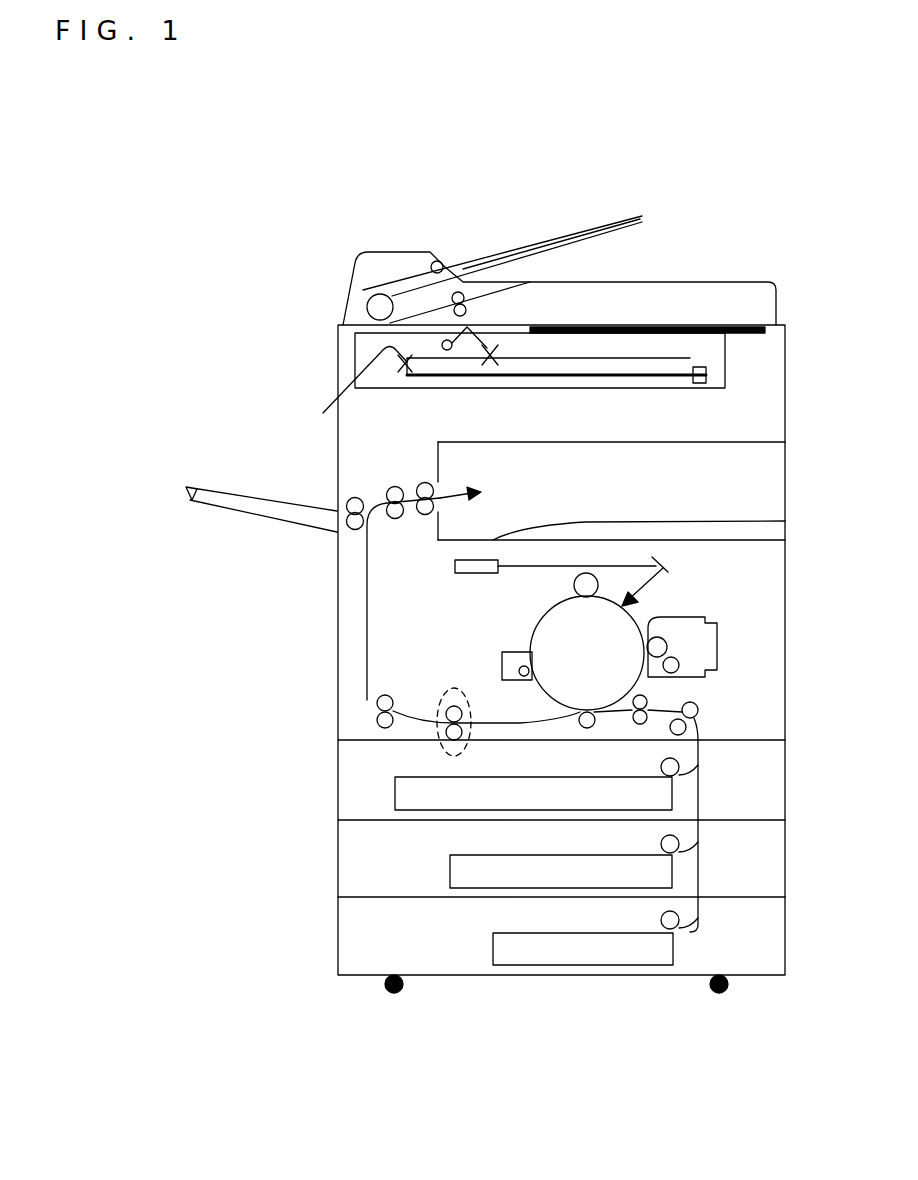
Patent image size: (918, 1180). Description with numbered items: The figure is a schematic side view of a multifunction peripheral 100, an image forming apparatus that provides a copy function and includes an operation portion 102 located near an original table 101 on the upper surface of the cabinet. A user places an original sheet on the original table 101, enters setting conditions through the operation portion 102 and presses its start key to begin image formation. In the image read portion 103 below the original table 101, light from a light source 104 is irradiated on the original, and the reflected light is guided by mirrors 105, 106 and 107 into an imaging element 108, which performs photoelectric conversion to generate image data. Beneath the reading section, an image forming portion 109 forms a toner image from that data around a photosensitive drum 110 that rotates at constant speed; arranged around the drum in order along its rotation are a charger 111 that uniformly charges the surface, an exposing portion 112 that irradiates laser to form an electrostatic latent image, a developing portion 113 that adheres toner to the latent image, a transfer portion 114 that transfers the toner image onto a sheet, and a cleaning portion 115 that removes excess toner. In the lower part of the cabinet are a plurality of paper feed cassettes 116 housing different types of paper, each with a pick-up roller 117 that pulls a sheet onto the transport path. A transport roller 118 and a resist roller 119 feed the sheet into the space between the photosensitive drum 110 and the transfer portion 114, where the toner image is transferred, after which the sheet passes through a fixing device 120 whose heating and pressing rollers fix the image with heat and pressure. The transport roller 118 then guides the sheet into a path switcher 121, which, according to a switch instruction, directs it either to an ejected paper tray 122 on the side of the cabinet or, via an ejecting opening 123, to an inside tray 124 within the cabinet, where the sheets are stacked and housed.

The multifunction peripheral 100 is at (561, 216).
The original table 101 is at (652, 325).
The operation portion 102 is at (738, 325).
The image read portion 103 is at (328, 391).
The light source 104 is at (463, 340).
The mirror 105 is at (483, 352).
The mirror 106 is at (337, 391).
The mirror 107 is at (402, 388).
The imaging element 108 is at (706, 367).
The image forming portion 109 is at (326, 723).
The photosensitive drum 110 is at (552, 632).
The charger 111 is at (572, 582).
The exposing portion 112 is at (453, 568).
The developing portion 113 is at (719, 637).
The transfer portion 114 is at (578, 723).
The cleaning portion 115 is at (503, 655).
The paper feed cassette 116 is at (401, 802).
The pick-up roller 117 is at (672, 767).
The transport roller 118 is at (382, 703).
The resist roller 119 is at (641, 724).
The fixing device 120 is at (440, 731).
The path switcher 121 is at (364, 522).
The ejected paper tray 122 is at (186, 487).
The ejecting opening 123 is at (438, 481).
The inside tray 124 is at (520, 535).